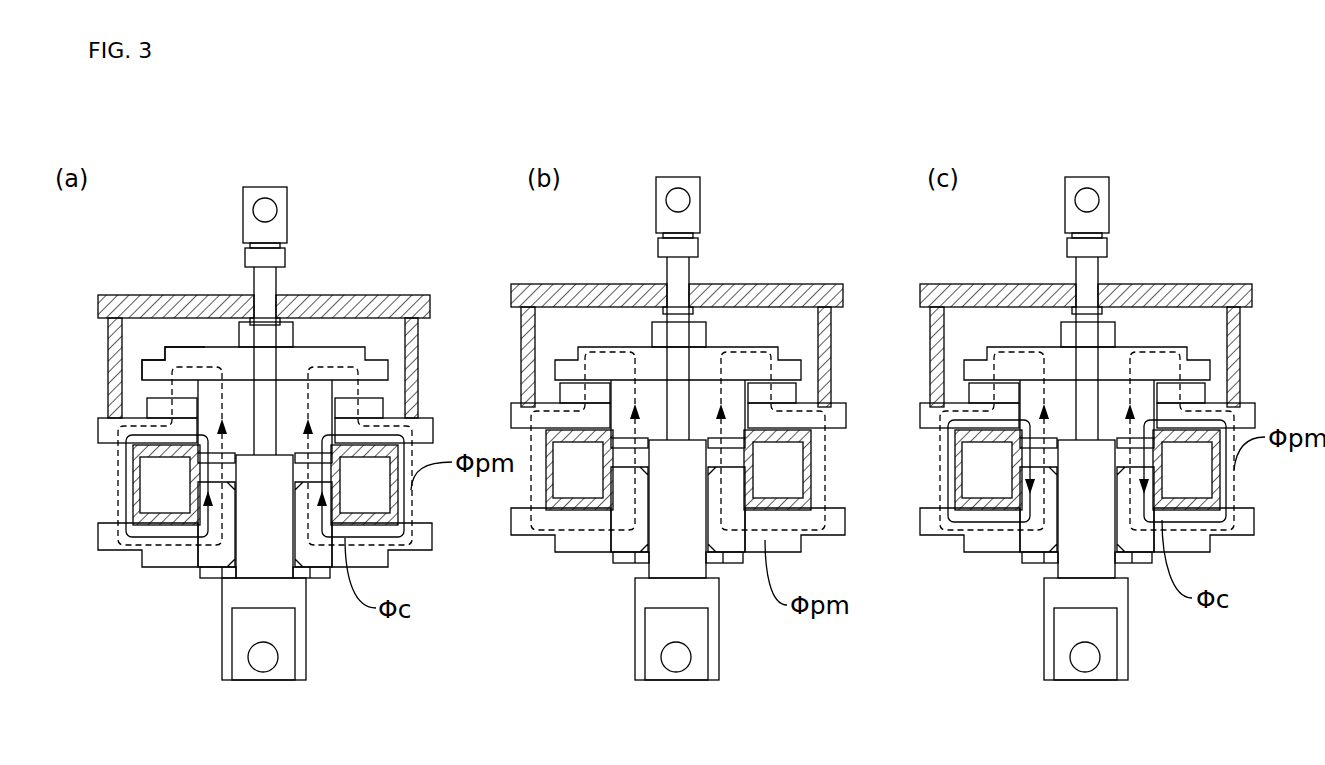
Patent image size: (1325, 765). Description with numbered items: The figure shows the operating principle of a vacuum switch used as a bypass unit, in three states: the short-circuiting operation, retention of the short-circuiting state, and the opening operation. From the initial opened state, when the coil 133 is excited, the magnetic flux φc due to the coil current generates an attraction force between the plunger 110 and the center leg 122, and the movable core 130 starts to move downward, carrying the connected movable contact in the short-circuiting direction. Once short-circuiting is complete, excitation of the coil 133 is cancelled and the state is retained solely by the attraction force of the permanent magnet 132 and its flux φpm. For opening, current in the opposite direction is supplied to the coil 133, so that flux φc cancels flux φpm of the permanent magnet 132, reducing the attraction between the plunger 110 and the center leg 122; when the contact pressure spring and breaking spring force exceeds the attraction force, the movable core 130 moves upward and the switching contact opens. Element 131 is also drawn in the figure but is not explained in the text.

The plunger 110 is at (238, 397).
The center leg 122 is at (217, 513).
The movable core 130 is at (332, 358).
The yoke step portion 131 is at (178, 353).
The permanent magnet 132 is at (158, 413).
The coil 133 is at (382, 508).